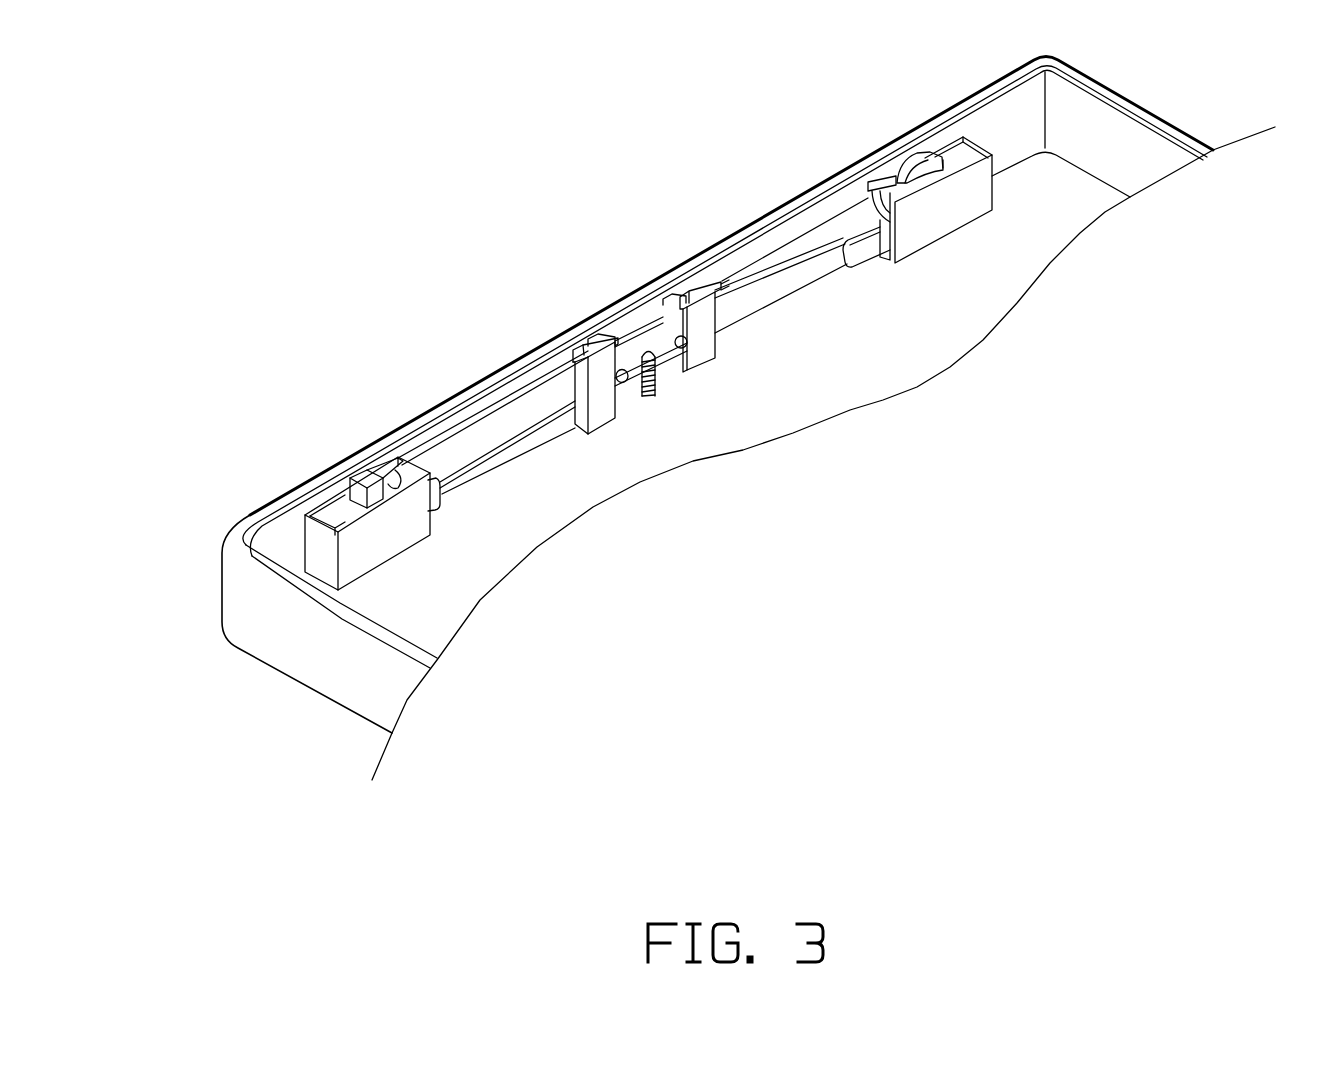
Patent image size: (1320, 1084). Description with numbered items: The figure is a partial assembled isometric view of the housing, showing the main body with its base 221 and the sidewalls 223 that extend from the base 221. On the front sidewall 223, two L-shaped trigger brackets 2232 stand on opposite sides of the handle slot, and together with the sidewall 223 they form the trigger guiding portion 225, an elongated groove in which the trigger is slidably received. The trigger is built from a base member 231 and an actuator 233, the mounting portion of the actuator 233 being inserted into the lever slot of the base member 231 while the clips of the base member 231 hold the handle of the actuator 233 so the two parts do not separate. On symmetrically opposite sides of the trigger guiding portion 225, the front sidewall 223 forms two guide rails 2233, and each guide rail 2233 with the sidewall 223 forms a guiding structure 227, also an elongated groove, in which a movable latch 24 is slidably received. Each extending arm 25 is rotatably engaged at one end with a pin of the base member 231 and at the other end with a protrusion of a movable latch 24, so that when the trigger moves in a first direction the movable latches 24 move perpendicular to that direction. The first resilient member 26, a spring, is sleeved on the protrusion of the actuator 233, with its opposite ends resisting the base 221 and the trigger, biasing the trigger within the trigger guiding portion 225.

The base 221 is at (443, 590).
The sidewall 223 is at (305, 642).
The guide rail 2233 is at (408, 523).
The guiding structure 227 is at (333, 510).
The movable latch 24 is at (368, 476).
The extending arm 25 is at (507, 427).
The trigger bracket 2232 is at (600, 397).
The base member 231 is at (610, 338).
The actuator 233 is at (655, 335).
The trigger guiding portion 225 is at (567, 415).
The first resilient member 26 is at (657, 382).